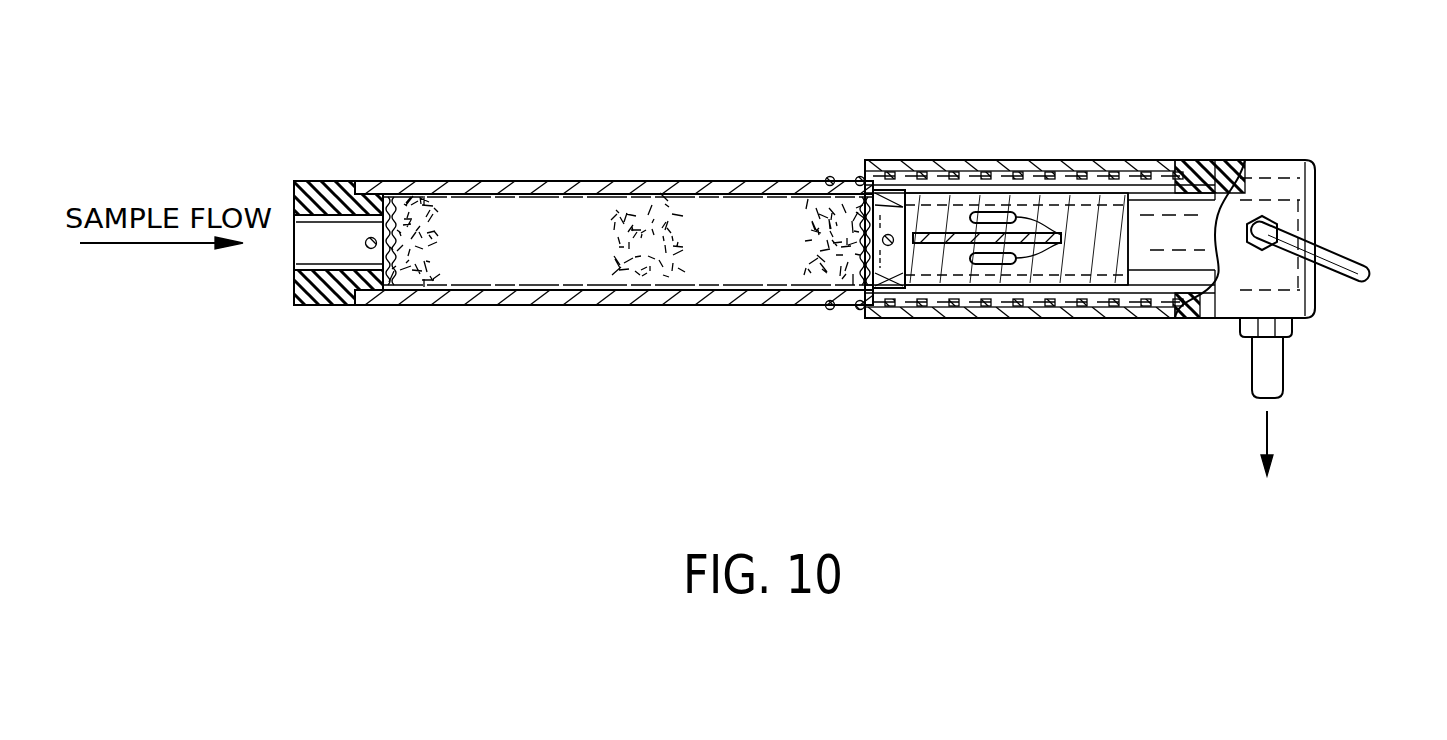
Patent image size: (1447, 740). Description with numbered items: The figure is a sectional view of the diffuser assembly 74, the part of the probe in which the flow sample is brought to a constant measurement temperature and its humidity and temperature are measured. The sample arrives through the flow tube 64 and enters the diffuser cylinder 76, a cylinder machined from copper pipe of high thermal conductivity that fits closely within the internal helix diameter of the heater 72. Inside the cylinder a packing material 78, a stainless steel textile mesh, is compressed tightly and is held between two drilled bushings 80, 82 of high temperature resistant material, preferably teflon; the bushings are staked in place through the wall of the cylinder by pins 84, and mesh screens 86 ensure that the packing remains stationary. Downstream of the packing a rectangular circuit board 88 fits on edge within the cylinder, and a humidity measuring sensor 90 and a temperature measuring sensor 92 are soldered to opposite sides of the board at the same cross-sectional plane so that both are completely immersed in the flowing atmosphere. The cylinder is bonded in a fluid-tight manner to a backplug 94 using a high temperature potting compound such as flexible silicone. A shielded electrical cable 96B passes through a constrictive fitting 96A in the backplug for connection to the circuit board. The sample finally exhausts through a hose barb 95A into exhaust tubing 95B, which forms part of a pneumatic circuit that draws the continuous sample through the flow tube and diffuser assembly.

The flow tube 64 is at (1091, 160).
The heater 72 is at (830, 181).
The diffuser assembly 74 is at (703, 114).
The diffuser cylinder 76 is at (530, 181).
The packing material 78 is at (640, 255).
The drilled bushing 80 is at (318, 181).
The drilled bushing 82 is at (875, 302).
The pin 84 is at (371, 250).
The mesh screen 86 is at (428, 275).
The circuit board 88 is at (1073, 270).
The humidity measuring sensor 90 is at (1000, 212).
The temperature measuring sensor 92 is at (1020, 266).
The backplug 94 is at (1262, 160).
The hose barb 95A is at (1292, 328).
The exhaust tubing 95B is at (1283, 368).
The constrictive fitting 96A is at (1282, 224).
The shielded electrical cable 96B is at (1337, 256).